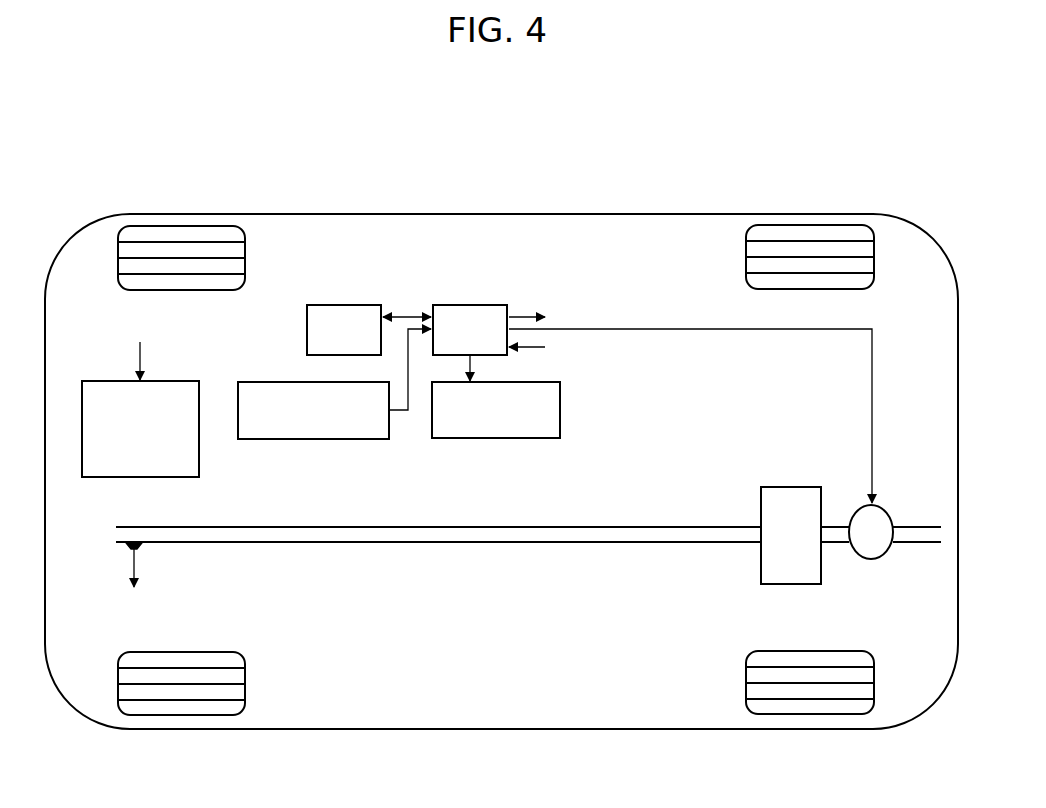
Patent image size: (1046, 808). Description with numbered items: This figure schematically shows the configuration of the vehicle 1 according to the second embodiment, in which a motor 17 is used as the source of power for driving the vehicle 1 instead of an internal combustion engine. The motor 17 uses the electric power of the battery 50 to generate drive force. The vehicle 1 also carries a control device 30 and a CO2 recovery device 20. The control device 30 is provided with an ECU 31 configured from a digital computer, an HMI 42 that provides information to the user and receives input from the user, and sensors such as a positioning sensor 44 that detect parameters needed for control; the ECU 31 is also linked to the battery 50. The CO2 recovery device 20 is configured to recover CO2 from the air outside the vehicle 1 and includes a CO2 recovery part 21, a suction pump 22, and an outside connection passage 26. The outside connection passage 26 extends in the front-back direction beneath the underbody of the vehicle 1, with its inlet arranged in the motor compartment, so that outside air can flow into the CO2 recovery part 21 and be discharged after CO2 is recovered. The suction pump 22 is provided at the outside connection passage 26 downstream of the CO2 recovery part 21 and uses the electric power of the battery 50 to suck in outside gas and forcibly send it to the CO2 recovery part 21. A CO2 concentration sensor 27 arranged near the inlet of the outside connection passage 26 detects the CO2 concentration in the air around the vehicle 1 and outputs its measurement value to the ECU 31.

The vehicle 1 is at (453, 214).
The motor 17 is at (176, 381).
The CO2 recovery device 20 is at (738, 447).
The CO2 recovery part 21 is at (788, 487).
The suction pump 22 is at (888, 511).
The outside connection passage 26 is at (285, 527).
The CO2 concentration sensor 27 is at (138, 549).
The control device 30 is at (506, 292).
The ECU 31 is at (473, 305).
The HMI 42 is at (330, 305).
The positioning sensor 44 is at (268, 382).
The battery 50 is at (494, 440).